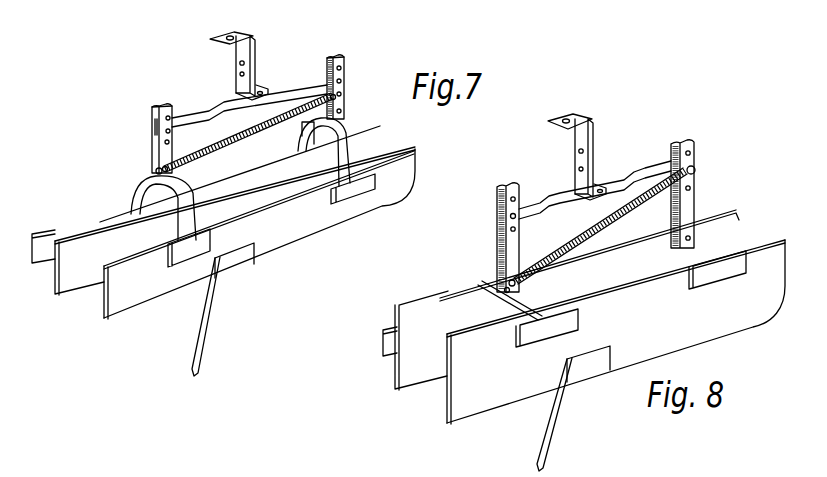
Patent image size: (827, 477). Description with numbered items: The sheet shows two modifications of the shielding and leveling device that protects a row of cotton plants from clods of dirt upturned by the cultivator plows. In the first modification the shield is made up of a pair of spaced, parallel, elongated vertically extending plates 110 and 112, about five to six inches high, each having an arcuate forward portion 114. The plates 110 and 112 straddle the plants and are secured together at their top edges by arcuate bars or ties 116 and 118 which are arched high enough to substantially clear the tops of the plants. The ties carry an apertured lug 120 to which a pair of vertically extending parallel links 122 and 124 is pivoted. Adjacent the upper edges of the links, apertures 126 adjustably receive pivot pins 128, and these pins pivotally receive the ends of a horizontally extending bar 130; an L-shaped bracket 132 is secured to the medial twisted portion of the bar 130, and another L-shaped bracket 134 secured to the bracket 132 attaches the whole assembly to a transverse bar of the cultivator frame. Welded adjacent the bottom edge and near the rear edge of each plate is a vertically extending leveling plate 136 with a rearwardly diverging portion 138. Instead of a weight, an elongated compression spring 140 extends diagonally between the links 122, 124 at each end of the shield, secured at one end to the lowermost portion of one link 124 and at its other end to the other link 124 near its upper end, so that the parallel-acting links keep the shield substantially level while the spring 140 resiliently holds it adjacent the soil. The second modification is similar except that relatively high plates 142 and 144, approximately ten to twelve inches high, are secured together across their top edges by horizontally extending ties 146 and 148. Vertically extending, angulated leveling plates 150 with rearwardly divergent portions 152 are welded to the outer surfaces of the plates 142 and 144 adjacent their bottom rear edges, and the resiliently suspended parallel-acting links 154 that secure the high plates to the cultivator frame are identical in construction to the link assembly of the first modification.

In FIG. 7, the plate 110 is at (67, 274).
In FIG. 7, the plate 112 is at (143, 290).
In FIG. 7, the arcuate forward portion 114 is at (398, 175).
In FIG. 7, the arcuate bar or tie 116 is at (177, 189).
In FIG. 7, the arcuate bar or tie 118 is at (340, 126).
In FIG. 7, the apertured lug 120 is at (146, 166).
In FIG. 7, the link 122 is at (322, 47).
In FIG. 7, the link 124 is at (160, 154).
In FIG. 7, the aperture 126 is at (150, 103).
In FIG. 7, the pivot pin 128 is at (165, 110).
In FIG. 7, the horizontally extending bar 130 is at (294, 75).
In FIG. 7, the L-shaped bracket 132 is at (247, 57).
In FIG. 7, the L-shaped bracket 134 is at (216, 26).
In FIG. 7, the leveling plate 136 is at (225, 256).
In FIG. 7, the rearwardly diverging portion 138 is at (59, 223).
In FIG. 7, the compression spring 140 is at (243, 127).
In FIG. 8, the plate 142 is at (465, 395).
In FIG. 8, the plate 144 is at (409, 369).
In FIG. 8, the horizontally extending tie 146 is at (520, 294).
In FIG. 8, the horizontally extending tie 148 is at (691, 237).
In FIG. 8, the angulated leveling plate 150 is at (582, 359).
In FIG. 8, the rearwardly divergent portion 152 is at (382, 321).
In FIG. 8, the resiliently suspended parallel-acting links 154 is at (637, 148).